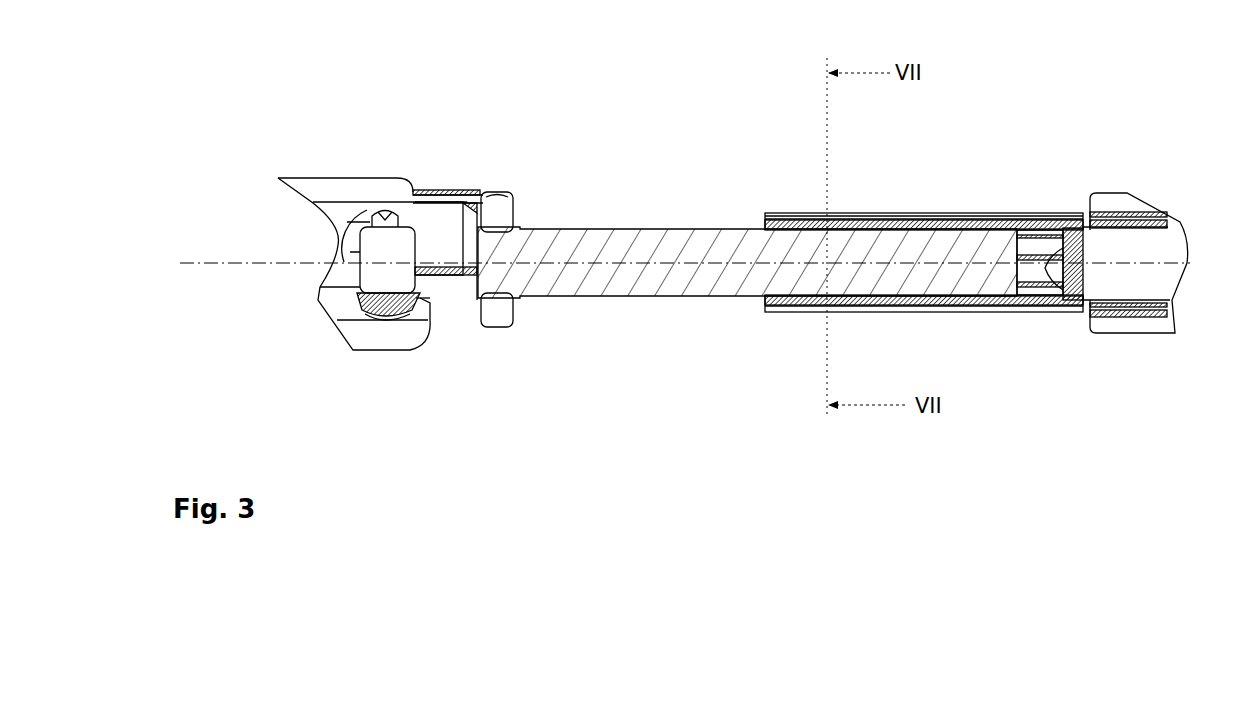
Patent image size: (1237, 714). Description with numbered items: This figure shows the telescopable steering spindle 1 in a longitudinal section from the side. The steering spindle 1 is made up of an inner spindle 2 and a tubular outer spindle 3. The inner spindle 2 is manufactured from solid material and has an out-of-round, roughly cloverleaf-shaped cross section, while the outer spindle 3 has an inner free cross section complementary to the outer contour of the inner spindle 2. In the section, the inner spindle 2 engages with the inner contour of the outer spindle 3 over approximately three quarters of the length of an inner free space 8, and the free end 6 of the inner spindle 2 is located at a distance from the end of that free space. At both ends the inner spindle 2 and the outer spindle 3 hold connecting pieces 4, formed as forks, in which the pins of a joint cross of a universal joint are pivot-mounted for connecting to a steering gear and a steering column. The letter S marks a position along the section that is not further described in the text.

The steering spindle 1 is at (549, 202).
The inner spindle 2 is at (610, 270).
The outer spindle 3 is at (947, 217).
The connecting pieces 4 is at (428, 192).
The free end 6 is at (1035, 285).
The inner free space 8 is at (1033, 245).
The gap S is at (848, 220).